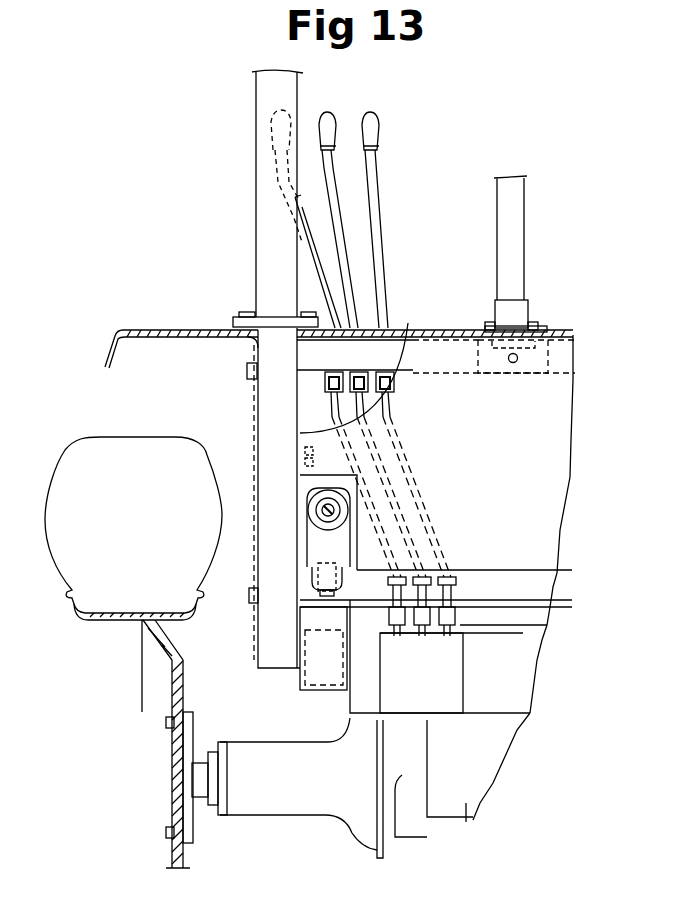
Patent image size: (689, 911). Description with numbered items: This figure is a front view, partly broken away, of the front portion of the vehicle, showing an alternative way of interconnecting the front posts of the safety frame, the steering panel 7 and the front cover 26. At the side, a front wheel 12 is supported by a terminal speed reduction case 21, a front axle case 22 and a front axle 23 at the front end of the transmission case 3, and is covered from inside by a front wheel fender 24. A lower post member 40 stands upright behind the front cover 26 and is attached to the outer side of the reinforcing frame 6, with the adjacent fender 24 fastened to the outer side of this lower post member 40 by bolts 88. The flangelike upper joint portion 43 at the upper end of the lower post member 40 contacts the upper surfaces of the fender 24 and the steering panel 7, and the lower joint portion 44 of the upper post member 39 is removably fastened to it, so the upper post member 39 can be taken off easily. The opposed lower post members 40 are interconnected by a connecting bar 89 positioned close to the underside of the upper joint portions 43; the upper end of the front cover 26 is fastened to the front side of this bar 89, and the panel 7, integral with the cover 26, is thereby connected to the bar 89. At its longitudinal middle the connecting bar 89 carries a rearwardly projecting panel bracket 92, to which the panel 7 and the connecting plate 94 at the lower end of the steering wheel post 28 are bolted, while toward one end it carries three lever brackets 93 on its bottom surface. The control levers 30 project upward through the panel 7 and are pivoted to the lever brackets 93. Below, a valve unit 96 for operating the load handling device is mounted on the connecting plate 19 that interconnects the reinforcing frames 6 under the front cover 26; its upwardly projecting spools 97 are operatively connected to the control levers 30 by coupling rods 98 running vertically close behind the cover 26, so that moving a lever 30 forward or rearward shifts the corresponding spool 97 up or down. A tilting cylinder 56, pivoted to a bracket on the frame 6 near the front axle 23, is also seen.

The transmission case 3 is at (464, 822).
The reinforcing frame 6 is at (300, 690).
The steering panel 7 is at (455, 331).
The front wheel 12 is at (118, 460).
The connecting plate 19 is at (528, 690).
The terminal speed reduction case 21 is at (415, 830).
The front axle case 22 is at (283, 805).
The front axle 23 is at (200, 782).
The front wheel fender 24 is at (143, 331).
The front cover 26 is at (558, 494).
The post 28 is at (516, 232).
The control lever 30 is at (371, 207).
The upper post member 39 is at (258, 120).
The lower post member 40 is at (278, 443).
The upper joint portion 43 is at (262, 333).
The lower joint portion 44 is at (246, 314).
The tilting cylinder 56 is at (345, 500).
The bolt 88 is at (247, 376).
The connecting bar 89 is at (450, 377).
The panel bracket 92 is at (550, 330).
The lever bracket 93 is at (350, 372).
The connecting plate 94 is at (510, 328).
The valve unit 96 is at (450, 690).
The spool 97 is at (445, 638).
The coupling rod 98 is at (430, 528).